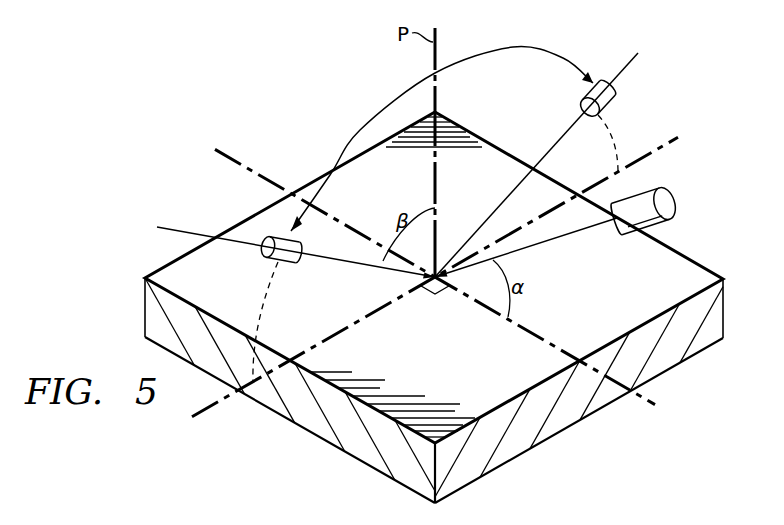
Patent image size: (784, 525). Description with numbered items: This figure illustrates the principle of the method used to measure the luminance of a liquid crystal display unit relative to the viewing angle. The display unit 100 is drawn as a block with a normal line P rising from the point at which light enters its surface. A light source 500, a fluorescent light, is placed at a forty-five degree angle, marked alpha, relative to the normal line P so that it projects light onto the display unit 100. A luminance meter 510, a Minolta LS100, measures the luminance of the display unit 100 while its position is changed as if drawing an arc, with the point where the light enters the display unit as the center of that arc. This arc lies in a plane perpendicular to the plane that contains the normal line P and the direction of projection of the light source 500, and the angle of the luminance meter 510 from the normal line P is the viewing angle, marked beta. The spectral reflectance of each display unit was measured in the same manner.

The substrate / sample 100 is at (695, 277).
The light source 500 is at (670, 200).
The luminance meter 510 is at (298, 262).